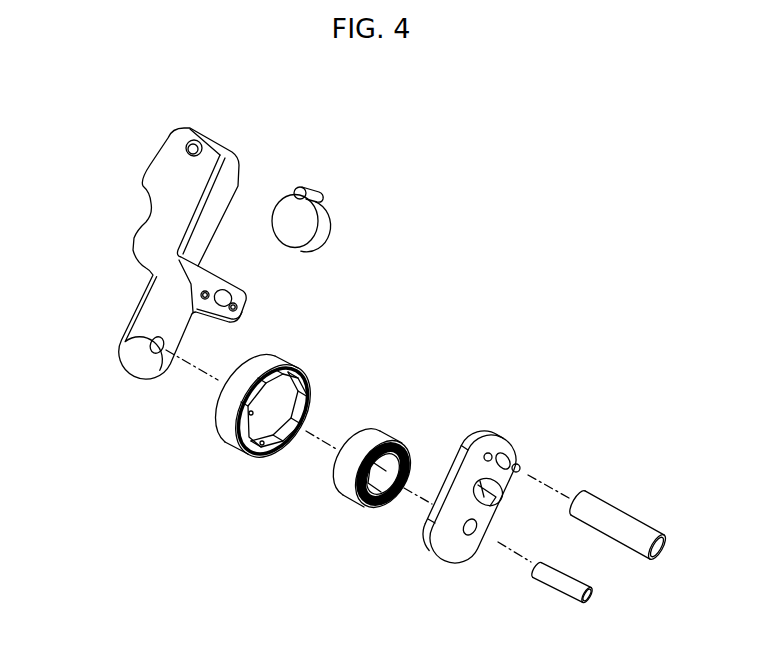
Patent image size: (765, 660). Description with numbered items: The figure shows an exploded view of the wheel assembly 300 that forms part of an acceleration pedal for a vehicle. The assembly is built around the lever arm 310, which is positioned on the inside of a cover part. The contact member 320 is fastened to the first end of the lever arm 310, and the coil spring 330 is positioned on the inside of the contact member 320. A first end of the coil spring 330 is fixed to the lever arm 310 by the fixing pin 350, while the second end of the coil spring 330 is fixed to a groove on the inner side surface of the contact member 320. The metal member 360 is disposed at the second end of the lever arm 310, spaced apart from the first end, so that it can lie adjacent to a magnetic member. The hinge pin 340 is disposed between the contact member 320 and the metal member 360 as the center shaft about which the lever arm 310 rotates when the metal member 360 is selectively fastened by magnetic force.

The wheel assembly 300 is at (494, 327).
The lever arm 310 is at (157, 223).
The contact member 320 is at (222, 416).
The coil spring 330 is at (338, 480).
The hinge pin 340 is at (610, 520).
The fixing pin 350 is at (552, 580).
The metal member 360 is at (313, 220).